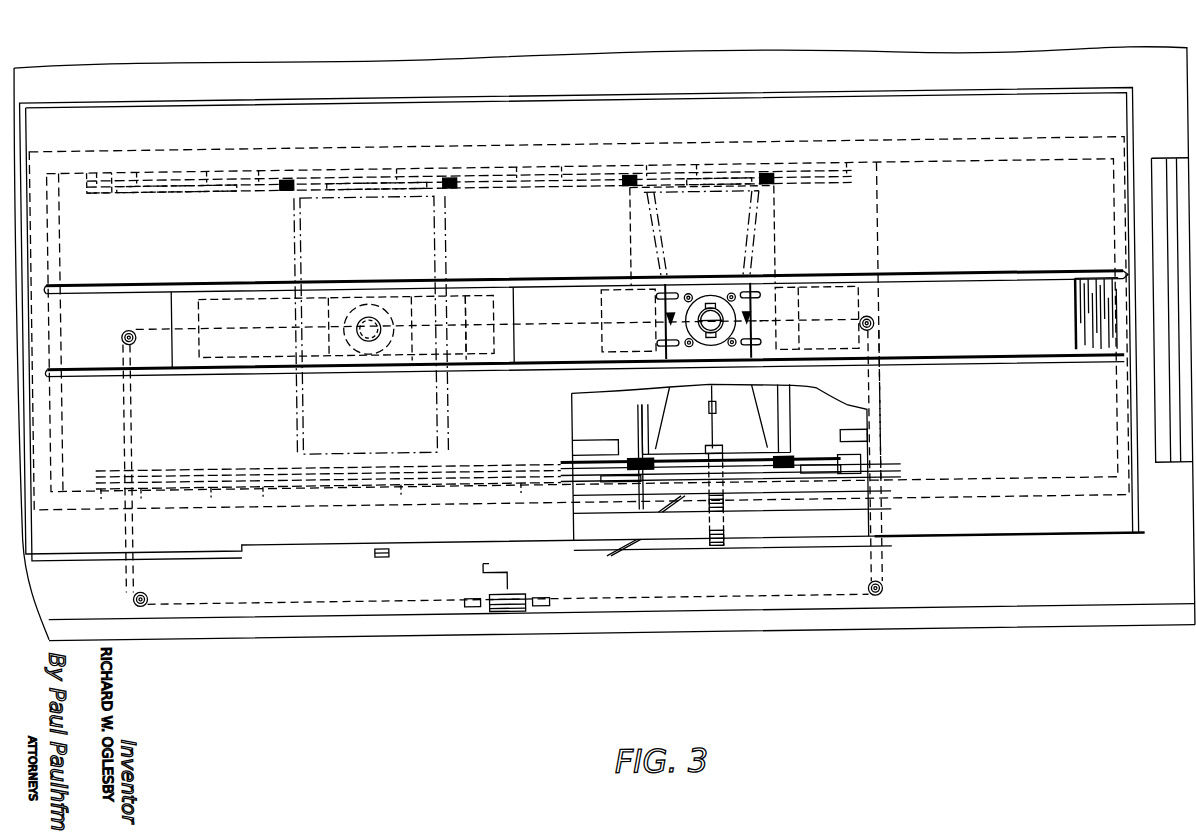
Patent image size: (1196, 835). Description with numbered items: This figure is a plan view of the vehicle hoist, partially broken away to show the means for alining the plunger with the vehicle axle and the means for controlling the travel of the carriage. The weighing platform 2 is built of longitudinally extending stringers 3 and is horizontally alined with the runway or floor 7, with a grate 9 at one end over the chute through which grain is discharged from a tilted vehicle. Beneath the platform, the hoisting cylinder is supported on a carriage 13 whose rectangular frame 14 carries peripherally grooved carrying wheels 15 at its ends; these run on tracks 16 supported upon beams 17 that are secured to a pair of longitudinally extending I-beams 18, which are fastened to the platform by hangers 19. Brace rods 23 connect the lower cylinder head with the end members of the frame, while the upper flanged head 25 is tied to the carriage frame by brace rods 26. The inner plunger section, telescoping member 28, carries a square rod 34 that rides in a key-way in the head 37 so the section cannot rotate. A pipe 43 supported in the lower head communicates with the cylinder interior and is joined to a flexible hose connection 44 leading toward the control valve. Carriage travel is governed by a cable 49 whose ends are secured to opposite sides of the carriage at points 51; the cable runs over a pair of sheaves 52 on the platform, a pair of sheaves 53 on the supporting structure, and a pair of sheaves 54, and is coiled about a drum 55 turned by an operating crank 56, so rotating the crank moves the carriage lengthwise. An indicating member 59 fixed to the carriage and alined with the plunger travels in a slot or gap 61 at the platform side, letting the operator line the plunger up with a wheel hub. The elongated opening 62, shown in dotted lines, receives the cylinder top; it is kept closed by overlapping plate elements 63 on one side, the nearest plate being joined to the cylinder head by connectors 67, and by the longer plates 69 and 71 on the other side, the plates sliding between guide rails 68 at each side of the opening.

The weighing platform 2 is at (1078, 543).
The stringers 3 is at (862, 442).
The runway or floor 7 is at (634, 406).
The grate 9 is at (1180, 403).
The carriage 13 is at (452, 237).
The rectangular frame 14 is at (305, 232).
The carrying wheels 15 is at (290, 176).
The tracks 16 is at (545, 186).
The beams 17 is at (155, 188).
The I-beams 18 is at (1031, 166).
The hangers 19 is at (202, 176).
The brace rods 23 is at (752, 222).
The flanged head 25 is at (750, 330).
The brace rods 26 is at (667, 316).
The telescoping member 28 is at (714, 310).
The rod 34 is at (690, 322).
The head 37 is at (710, 342).
The pipe 43 is at (716, 404).
The flexible hose connection 44 is at (718, 432).
The cable 49 is at (570, 313).
The cable attachment points 51 is at (640, 313).
The sheaves 52 is at (878, 326).
The sheaves 53 is at (144, 588).
The sheaves 54 is at (536, 606).
The drum 55 is at (518, 592).
The operating crank 56 is at (478, 566).
The indicating member 59 is at (378, 556).
The slot or gap 61 is at (505, 542).
The elongated opening 62 is at (226, 298).
The plate elements 63 is at (185, 290).
The connectors 67 is at (672, 294).
The guide rails 68 is at (378, 292).
The plate 69 is at (1027, 292).
The plate 71 is at (1096, 292).